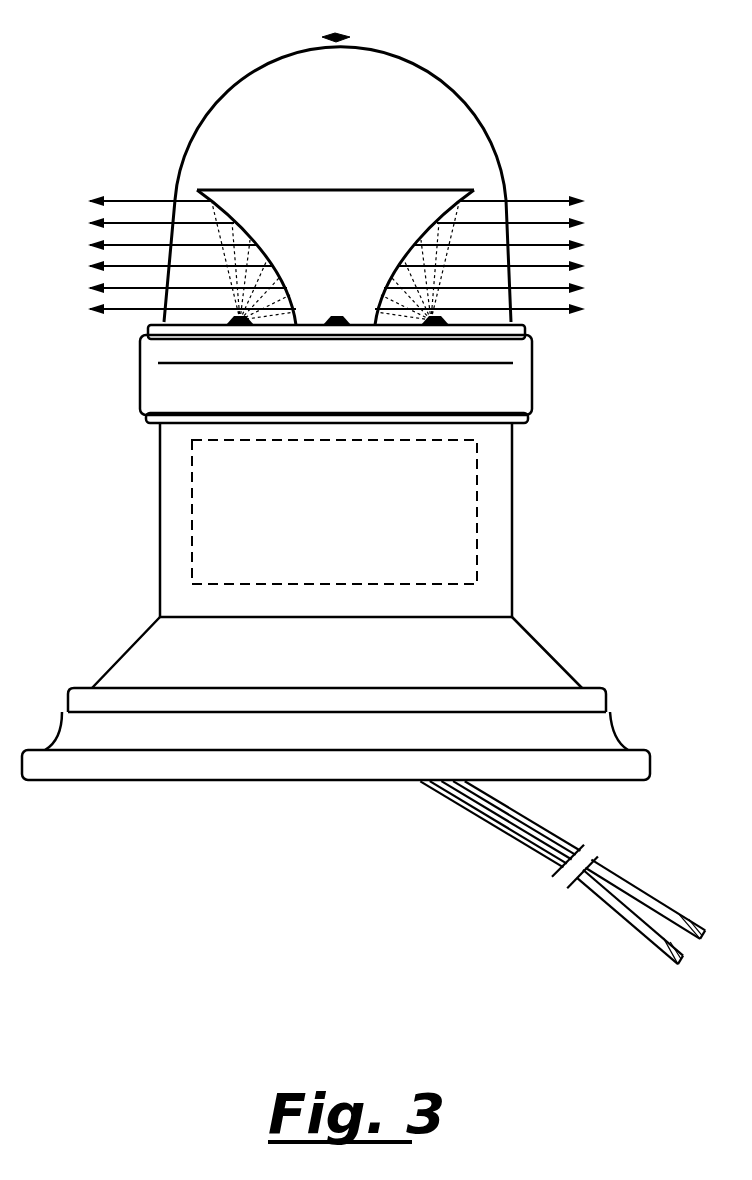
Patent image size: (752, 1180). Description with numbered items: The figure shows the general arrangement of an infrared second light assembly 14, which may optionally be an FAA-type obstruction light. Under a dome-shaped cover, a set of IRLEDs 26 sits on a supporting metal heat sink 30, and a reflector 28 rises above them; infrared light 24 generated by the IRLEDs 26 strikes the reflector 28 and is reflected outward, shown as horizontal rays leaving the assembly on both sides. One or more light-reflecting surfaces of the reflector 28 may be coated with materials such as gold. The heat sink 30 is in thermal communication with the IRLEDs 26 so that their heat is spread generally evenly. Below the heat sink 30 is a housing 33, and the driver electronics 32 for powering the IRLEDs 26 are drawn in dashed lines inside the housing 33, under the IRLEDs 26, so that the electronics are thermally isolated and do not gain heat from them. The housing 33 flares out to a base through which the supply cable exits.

The second light assembly 14 is at (188, 87).
The infrared light 24 is at (130, 201).
The IRLEDs 26 is at (232, 320).
The reflector 28 is at (343, 190).
The metal heat sink 30 is at (532, 360).
The driver electronics 32 is at (478, 470).
The housing 33 is at (160, 496).